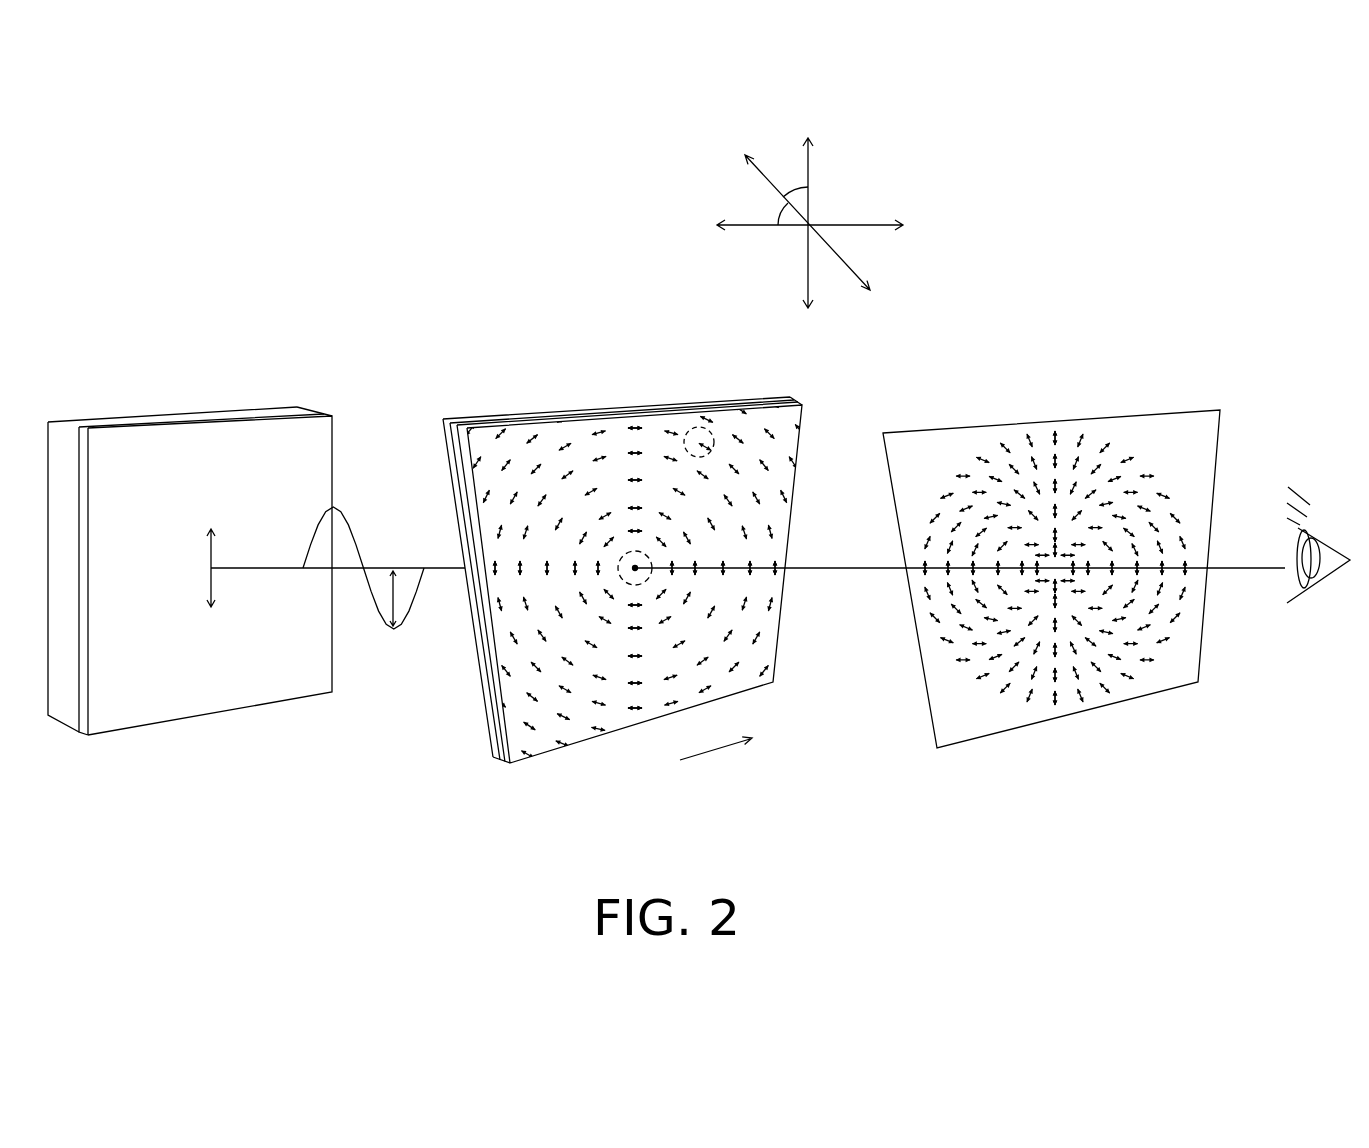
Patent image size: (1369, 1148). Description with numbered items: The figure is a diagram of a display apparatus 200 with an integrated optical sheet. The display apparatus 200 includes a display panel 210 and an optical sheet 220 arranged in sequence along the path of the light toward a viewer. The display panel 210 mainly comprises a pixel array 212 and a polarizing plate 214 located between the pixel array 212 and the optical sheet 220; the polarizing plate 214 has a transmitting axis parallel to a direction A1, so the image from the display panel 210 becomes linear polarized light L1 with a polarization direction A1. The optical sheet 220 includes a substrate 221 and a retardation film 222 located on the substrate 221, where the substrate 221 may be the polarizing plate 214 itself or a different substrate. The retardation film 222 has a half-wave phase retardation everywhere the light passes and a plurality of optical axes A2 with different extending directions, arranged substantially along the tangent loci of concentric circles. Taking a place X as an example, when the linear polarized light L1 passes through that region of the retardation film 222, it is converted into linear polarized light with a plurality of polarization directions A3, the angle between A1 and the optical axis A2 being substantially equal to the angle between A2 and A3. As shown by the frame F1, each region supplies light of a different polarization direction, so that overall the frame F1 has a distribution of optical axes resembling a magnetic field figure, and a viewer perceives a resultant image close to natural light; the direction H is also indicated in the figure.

The display apparatus 200 is at (699, 439).
The display panel 210 is at (190, 531).
The pixel array 212 is at (122, 423).
The polarizing plate 214 is at (201, 423).
The optical sheet 220 is at (641, 554).
The substrate 221 is at (771, 397).
The retardation film 222 is at (807, 470).
The polarization direction A1 is at (512, 350).
The optical axes A2 is at (700, 430).
The polarization directions A3 is at (1113, 438).
The frame F1 is at (1027, 416).
The linear polarized light L1 is at (375, 529).
The place X is at (681, 430).
The horizontal direction H is at (729, 745).